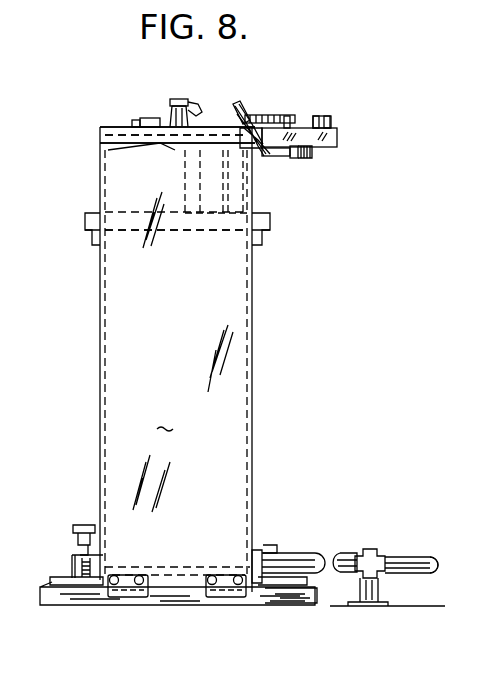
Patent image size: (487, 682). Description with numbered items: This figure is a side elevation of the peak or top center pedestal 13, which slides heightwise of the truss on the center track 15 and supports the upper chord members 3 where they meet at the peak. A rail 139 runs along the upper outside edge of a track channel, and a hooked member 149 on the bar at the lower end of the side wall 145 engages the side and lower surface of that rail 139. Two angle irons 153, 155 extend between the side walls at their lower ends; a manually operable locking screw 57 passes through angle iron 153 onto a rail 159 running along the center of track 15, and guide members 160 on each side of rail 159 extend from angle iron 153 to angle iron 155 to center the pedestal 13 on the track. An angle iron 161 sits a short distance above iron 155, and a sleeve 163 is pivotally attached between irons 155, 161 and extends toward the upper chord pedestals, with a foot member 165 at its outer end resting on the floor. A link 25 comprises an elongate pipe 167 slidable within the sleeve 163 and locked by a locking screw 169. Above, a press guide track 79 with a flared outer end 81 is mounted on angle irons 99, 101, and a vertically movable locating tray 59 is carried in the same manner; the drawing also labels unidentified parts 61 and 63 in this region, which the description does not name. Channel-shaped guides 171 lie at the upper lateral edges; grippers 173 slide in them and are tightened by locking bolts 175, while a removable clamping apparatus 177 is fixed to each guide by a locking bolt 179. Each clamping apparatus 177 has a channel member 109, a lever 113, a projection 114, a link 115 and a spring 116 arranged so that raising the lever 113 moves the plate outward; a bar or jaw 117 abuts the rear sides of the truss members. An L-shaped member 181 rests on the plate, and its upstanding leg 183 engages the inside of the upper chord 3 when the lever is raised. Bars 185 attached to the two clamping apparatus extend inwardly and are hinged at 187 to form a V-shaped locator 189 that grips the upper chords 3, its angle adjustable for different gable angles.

The upper chord member 3 is at (319, 114).
The peak pedestal 13 is at (263, 354).
The center track 15 is at (300, 603).
The link 25 is at (427, 556).
The locking screw 57 is at (82, 524).
The locating tray 59 is at (152, 144).
The lower plate 61 is at (176, 244).
The inner column 63 is at (182, 192).
The press guide track 79 is at (266, 221).
The outer end of guide track 81 is at (88, 214).
The angle iron 99 is at (95, 245).
The angle iron 101 is at (260, 242).
The channel member 109 is at (330, 138).
The lever 113 is at (240, 108).
The projection 114 is at (295, 159).
The link 115 is at (270, 157).
The spring 116 is at (308, 159).
The steel bar or jaw 117 is at (287, 114).
The rail 139 is at (50, 586).
The side wall 145 is at (166, 420).
The hooked member 149 is at (124, 598).
The angle iron 153 is at (73, 556).
The angle iron 155 is at (258, 586).
The rail 159 is at (62, 577).
The guide member 160 is at (188, 565).
The angle iron 161 is at (262, 544).
The sleeve 163 is at (338, 545).
The foot member 165 is at (379, 591).
The elongate pipe 167 is at (433, 567).
The locking screw 169 is at (375, 552).
The channel-shaped guide 171 is at (118, 127).
The gripper 173 is at (174, 108).
The locking bolt 175 is at (179, 98).
The clamping apparatus 177 is at (217, 108).
The locking bolt 179 is at (197, 100).
The L-shaped member 181 is at (341, 122).
The upstanding leg 183 is at (322, 115).
The bar 185 is at (150, 130).
The hinge 187 is at (135, 119).
The V-shaped locator 189 is at (153, 110).